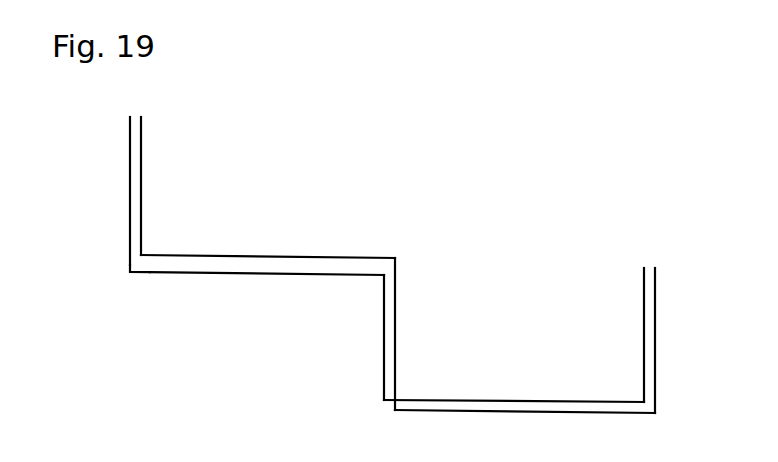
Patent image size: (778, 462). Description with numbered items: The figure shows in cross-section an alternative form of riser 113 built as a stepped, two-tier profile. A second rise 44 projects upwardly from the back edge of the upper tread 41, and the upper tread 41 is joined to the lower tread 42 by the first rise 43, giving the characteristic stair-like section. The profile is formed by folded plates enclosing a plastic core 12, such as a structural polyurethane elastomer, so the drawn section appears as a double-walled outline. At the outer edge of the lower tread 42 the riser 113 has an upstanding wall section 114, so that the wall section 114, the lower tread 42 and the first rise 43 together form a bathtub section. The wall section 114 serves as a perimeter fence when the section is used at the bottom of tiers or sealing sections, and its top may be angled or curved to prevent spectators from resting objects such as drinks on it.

The riser 113 is at (459, 220).
The second rise 44 is at (130, 195).
The plastic core 12 is at (146, 266).
The upper tread 41 is at (311, 257).
The first rise 43 is at (384, 340).
The lower tread 42 is at (476, 400).
The wall section 114 is at (655, 322).